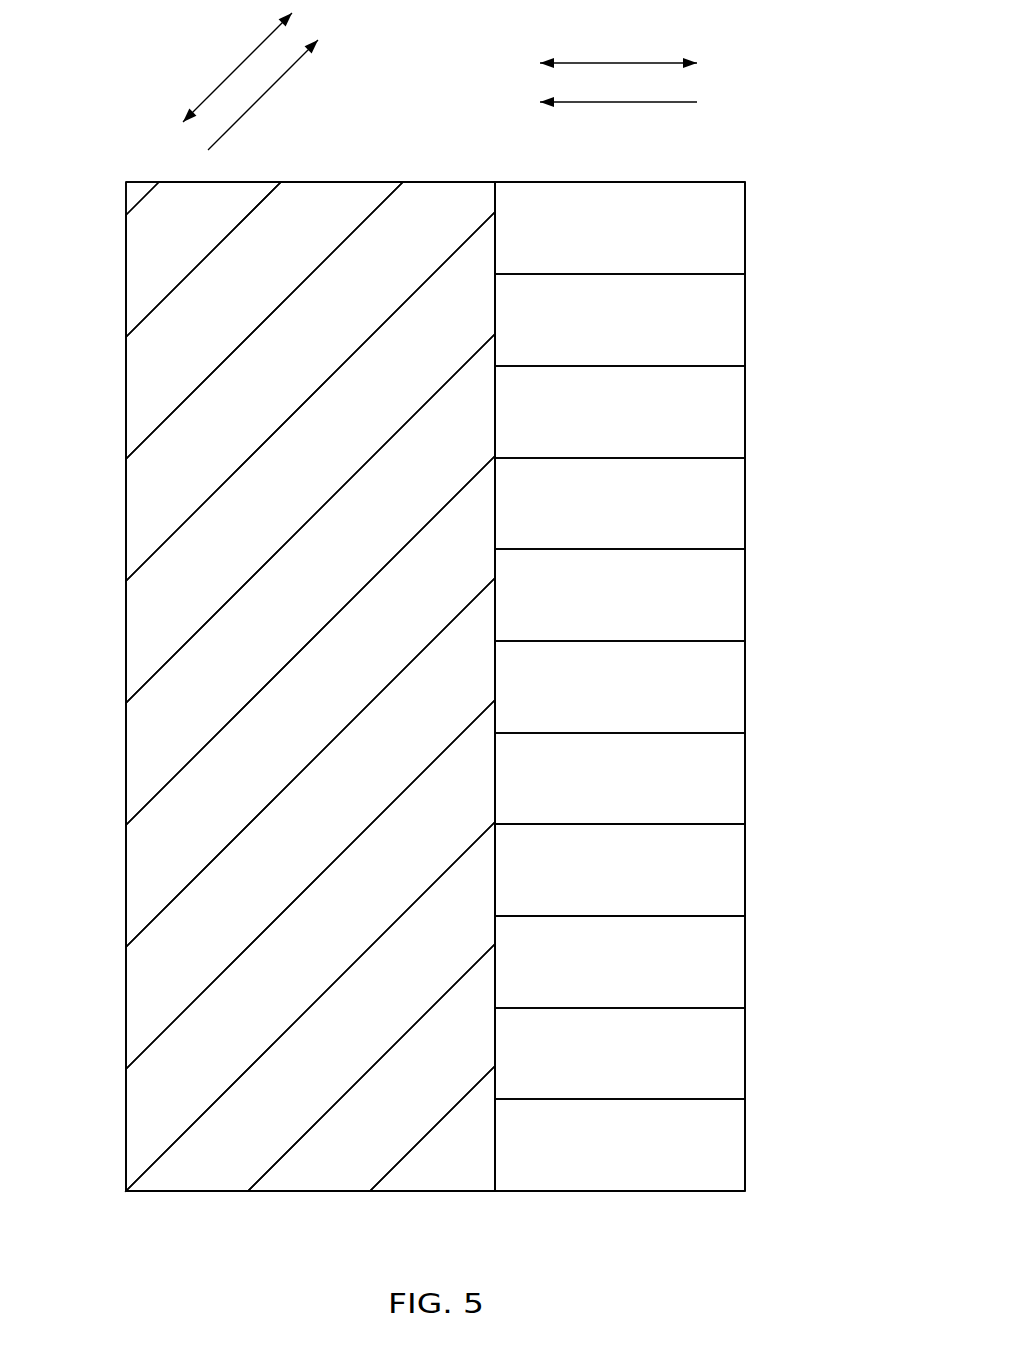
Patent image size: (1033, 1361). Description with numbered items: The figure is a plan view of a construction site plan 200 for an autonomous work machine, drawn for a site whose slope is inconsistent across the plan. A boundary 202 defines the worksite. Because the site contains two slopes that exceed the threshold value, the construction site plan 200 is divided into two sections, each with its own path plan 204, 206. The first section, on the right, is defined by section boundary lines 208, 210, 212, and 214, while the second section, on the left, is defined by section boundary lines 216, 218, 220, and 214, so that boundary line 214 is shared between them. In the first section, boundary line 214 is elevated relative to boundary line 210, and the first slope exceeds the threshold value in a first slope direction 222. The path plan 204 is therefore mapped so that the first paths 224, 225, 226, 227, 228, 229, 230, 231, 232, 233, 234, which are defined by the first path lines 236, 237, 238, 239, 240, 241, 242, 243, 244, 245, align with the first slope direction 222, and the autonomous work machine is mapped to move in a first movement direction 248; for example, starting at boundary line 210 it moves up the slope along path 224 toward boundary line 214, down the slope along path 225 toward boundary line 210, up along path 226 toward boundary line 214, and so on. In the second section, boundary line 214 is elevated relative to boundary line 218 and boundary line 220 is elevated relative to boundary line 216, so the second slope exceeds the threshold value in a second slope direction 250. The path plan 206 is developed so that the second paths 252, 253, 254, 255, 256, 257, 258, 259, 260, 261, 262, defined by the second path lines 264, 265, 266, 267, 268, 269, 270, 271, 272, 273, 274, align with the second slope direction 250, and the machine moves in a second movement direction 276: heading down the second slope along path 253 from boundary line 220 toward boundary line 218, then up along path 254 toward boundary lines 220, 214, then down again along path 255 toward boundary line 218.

The construction site plan 200 is at (735, 37).
The boundary 202 is at (748, 229).
The first path plan 204 is at (735, 863).
The second path plan 206 is at (145, 622).
The section boundary line 208 is at (668, 175).
The section boundary line 210 is at (762, 408).
The section boundary line 212 is at (628, 1205).
The section boundary line 214 is at (512, 224).
The section boundary line 216 is at (197, 1205).
The section boundary line 218 is at (115, 753).
The section boundary line 220 is at (347, 173).
The first slope direction 222 is at (620, 104).
The first path 224 is at (705, 246).
The first path 225 is at (705, 338).
The first path 226 is at (705, 429).
The first path 227 is at (705, 521).
The first path 228 is at (705, 613).
The first path 229 is at (705, 704).
The first path 230 is at (705, 796).
The first path 231 is at (705, 888).
The first path 232 is at (705, 980).
The first path 233 is at (705, 1071).
The first path 234 is at (705, 1163).
The first path line 236 is at (553, 273).
The first path line 237 is at (553, 365).
The first path line 238 is at (553, 457).
The first path line 239 is at (553, 548).
The first path line 240 is at (553, 640).
The first path line 241 is at (553, 732).
The first path line 242 is at (553, 823).
The first path line 243 is at (553, 915).
The first path line 244 is at (553, 1007).
The first path line 245 is at (553, 1098).
The first movement direction 248 is at (622, 62).
The second slope direction 250 is at (262, 97).
The second path 252 is at (173, 264).
The second path 253 is at (318, 238).
The second path 254 is at (355, 323).
The second path 255 is at (355, 445).
The second path 256 is at (355, 567).
The second path 257 is at (355, 689).
The second path 258 is at (355, 811).
The second path 259 is at (355, 932).
The second path 260 is at (355, 1054).
The second path 261 is at (431, 1101).
The second path 262 is at (481, 1149).
The second path line 264 is at (143, 200).
The second path line 265 is at (190, 273).
The second path line 266 is at (190, 395).
The second path line 267 is at (190, 517).
The second path line 268 is at (190, 639).
The second path line 269 is at (190, 761).
The second path line 270 is at (190, 883).
The second path line 271 is at (190, 1005).
The second path line 272 is at (190, 1127).
The second path line 273 is at (302, 1137).
The second path line 274 is at (400, 1161).
The second movement direction 276 is at (236, 69).